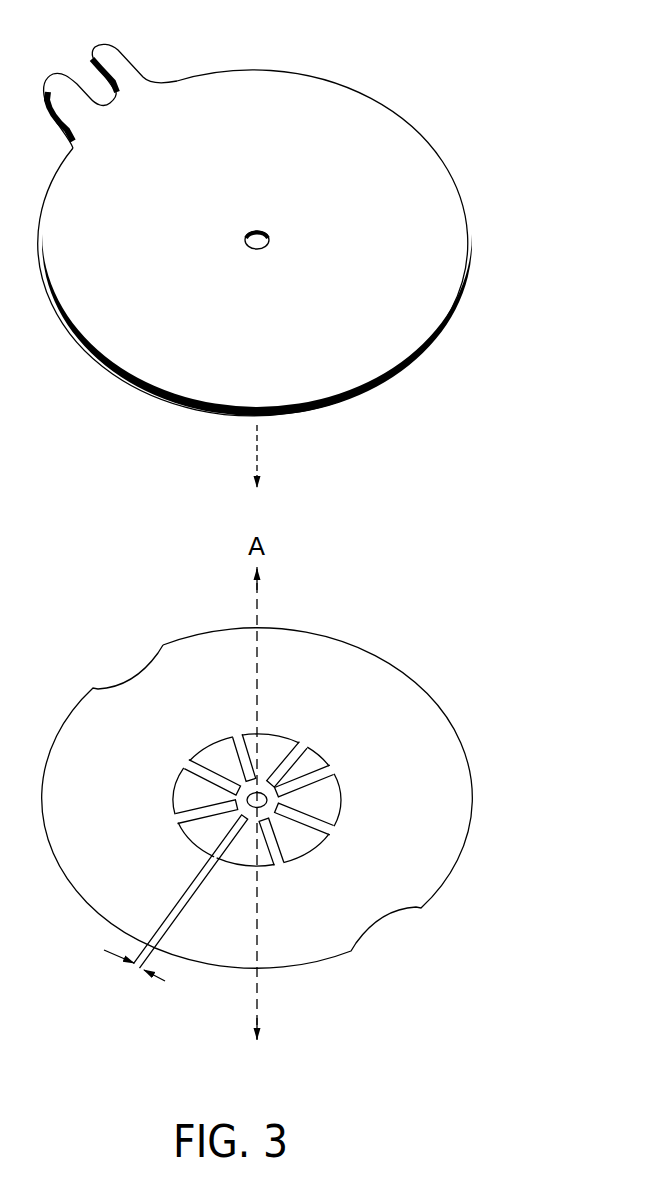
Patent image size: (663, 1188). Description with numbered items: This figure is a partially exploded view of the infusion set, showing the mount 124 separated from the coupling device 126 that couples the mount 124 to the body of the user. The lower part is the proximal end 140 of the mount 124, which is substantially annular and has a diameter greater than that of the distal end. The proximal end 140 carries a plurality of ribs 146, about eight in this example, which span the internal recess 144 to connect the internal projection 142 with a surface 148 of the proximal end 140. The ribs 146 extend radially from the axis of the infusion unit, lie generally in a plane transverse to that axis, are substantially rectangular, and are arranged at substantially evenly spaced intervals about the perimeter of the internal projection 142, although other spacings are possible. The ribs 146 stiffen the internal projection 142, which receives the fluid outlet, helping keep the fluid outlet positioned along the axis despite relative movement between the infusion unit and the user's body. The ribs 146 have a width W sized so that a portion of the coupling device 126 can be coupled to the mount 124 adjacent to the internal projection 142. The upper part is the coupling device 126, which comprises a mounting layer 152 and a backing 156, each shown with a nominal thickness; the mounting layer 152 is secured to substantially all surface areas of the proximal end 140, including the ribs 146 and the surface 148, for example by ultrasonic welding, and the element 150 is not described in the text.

The mount 124 is at (303, 777).
The coupling device 126 is at (308, 240).
The proximal end 140 is at (272, 622).
The internal projection 142 is at (288, 778).
The internal recess 144 is at (332, 808).
The ribs 146 is at (236, 734).
The surface 148 is at (448, 851).
The central hub opening 150 is at (247, 800).
The mounting layer 152 is at (338, 406).
The backing 156 is at (257, 66).
The width W is at (133, 966).